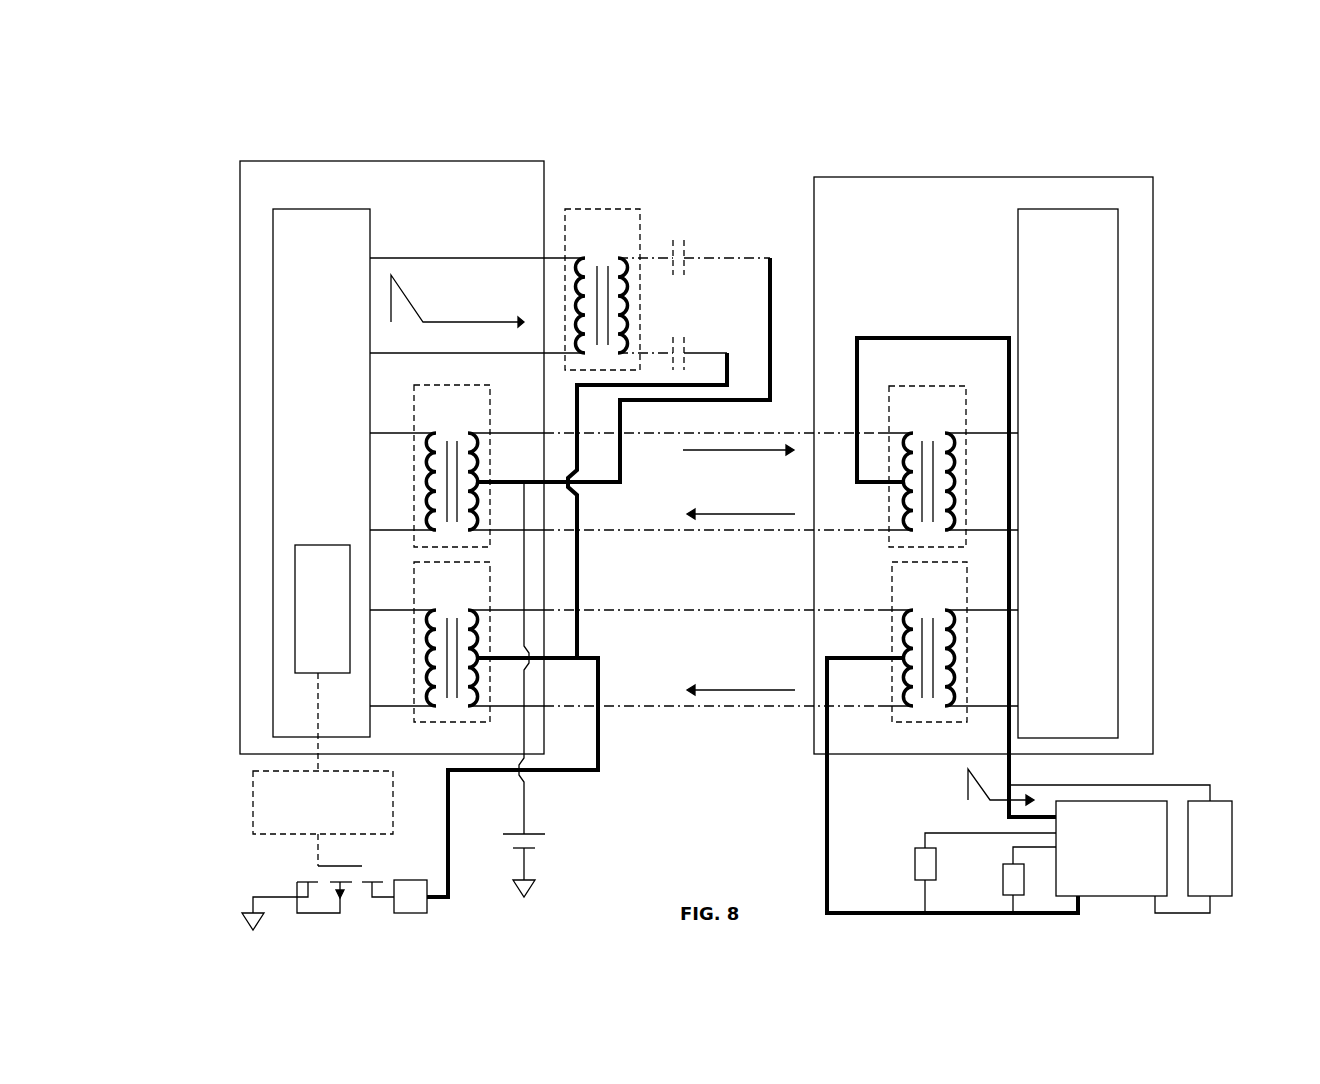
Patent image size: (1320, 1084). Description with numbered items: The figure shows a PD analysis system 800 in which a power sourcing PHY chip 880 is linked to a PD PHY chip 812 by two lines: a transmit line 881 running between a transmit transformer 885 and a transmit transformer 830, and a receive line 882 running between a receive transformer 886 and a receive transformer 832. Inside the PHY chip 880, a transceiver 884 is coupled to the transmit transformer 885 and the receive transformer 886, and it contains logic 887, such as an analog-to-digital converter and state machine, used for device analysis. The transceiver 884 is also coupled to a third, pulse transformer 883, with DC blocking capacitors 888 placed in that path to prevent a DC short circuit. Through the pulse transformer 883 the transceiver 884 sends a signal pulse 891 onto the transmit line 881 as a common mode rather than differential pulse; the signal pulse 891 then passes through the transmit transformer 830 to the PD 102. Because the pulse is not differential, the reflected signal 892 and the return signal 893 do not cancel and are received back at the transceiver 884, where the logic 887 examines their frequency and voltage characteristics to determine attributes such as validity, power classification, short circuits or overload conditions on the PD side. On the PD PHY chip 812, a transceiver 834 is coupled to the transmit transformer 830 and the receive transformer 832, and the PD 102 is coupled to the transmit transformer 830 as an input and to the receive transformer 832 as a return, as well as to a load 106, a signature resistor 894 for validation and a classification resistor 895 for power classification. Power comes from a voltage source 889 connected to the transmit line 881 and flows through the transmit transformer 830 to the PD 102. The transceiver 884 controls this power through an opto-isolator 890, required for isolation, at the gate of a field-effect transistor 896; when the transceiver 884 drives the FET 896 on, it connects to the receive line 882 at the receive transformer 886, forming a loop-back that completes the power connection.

The PD analysis system 800 is at (1208, 91).
The PHY chip 880 is at (424, 161).
The PD PHY chip 812 is at (1018, 177).
The transceiver 884 is at (336, 421).
The transceiver 834 is at (1086, 501).
The pulse transformer 883 is at (616, 235).
The transmit transformer 885 is at (467, 410).
The receive transformer 886 is at (467, 588).
The transmit transformer 830 is at (942, 411).
The receive transformer 832 is at (944, 588).
The DC blocking capacitors 888 is at (684, 272).
The logic 887 is at (320, 545).
The opto-isolator 890 is at (253, 820).
The field-effect transistor 896 is at (297, 882).
The voltage source 889 is at (590, 833).
The signal pulse 891 is at (473, 256).
The reflected signal 892 is at (749, 514).
The return signal 893 is at (742, 690).
The transmit line 881 is at (620, 498).
The receive line 882 is at (673, 638).
The signature resistor 894 is at (915, 866).
The classification resistor 895 is at (1003, 880).
The PD 102 is at (1122, 897).
The load 106 is at (1216, 801).